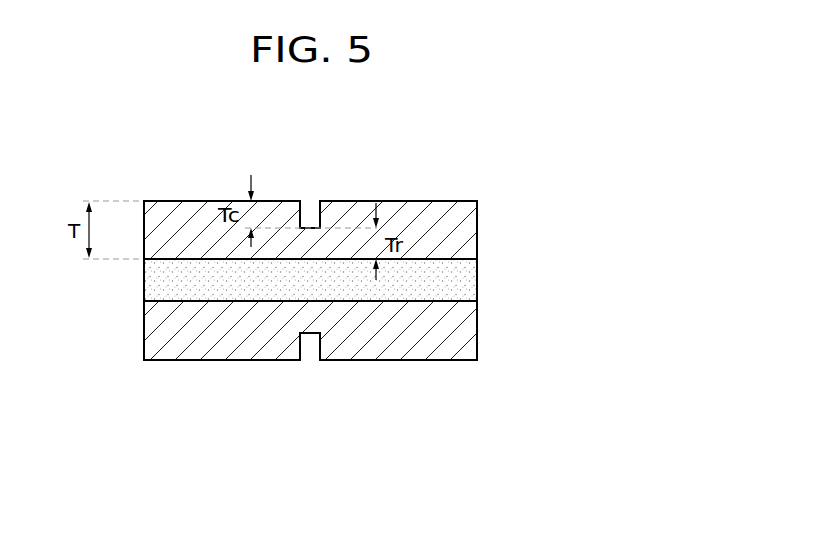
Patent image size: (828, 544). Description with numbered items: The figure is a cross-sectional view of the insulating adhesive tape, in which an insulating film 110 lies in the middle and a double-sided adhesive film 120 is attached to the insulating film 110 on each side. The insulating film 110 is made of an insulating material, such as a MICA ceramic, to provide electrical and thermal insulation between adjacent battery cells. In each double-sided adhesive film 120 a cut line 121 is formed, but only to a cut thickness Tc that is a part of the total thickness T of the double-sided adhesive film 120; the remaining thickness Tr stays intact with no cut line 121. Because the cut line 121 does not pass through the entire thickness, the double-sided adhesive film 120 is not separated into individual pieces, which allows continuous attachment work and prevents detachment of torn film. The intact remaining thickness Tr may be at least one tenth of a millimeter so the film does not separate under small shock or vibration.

The insulating film 110 is at (470, 281).
The double-sided adhesive film 120 is at (473, 229).
The cut line 121 is at (317, 212).